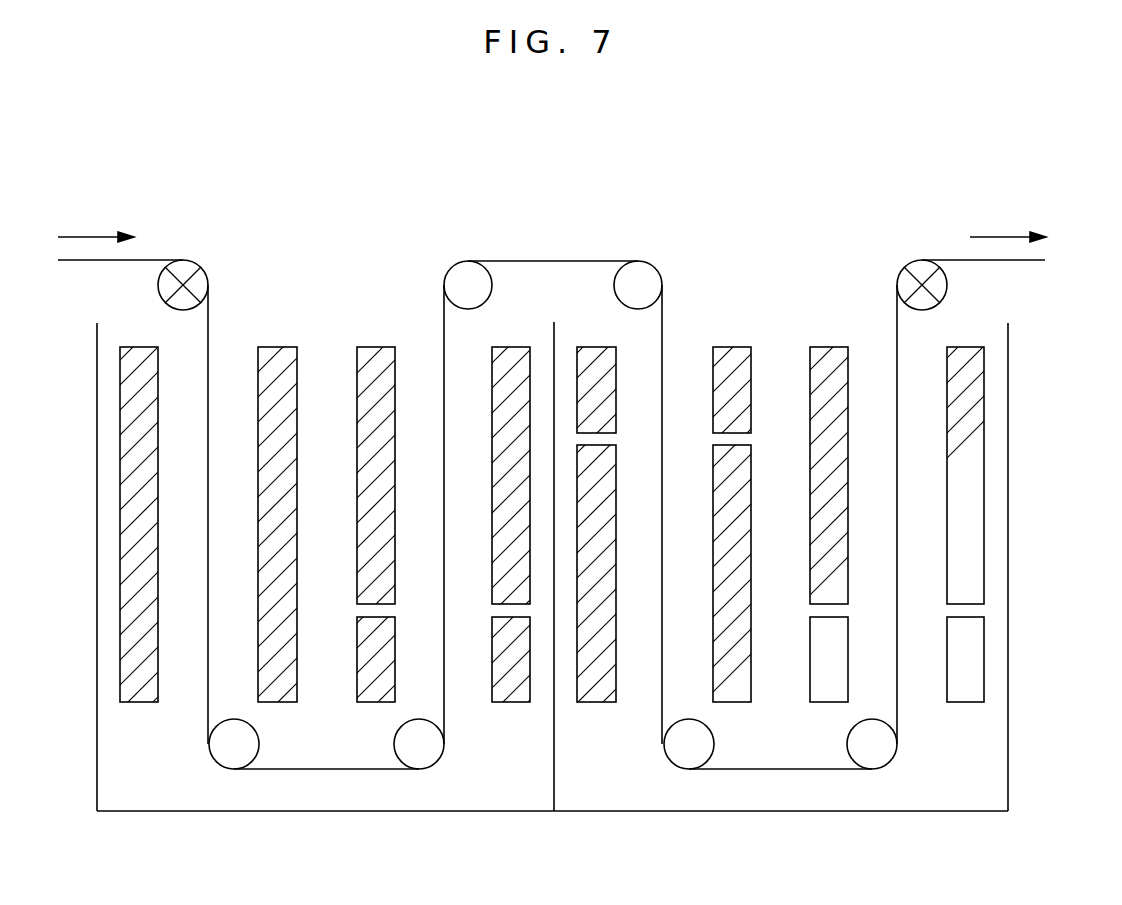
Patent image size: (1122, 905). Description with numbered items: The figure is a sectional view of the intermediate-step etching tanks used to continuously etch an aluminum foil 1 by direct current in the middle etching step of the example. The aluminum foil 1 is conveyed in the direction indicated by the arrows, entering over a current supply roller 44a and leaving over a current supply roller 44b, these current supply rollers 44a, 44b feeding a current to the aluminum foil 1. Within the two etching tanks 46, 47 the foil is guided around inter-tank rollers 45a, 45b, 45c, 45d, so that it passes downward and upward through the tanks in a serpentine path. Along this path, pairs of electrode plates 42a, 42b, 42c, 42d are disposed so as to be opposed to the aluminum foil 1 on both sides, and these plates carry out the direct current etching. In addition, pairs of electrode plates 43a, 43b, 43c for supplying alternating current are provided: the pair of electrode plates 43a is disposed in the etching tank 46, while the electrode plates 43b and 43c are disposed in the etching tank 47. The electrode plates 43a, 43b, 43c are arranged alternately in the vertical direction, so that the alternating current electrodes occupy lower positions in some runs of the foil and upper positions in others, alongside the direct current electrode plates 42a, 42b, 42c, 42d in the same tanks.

The aluminum foil 1 is at (68, 262).
The pair of electrode plates 42a is at (275, 540).
The pair of electrode plates 42b is at (520, 373).
The pair of electrode plates 42c is at (724, 658).
The pair of electrode plates 42d is at (960, 373).
The pair of electrode plates for supplying alternating current 43a is at (385, 660).
The pair of electrode plates for supplying alternating current 43b is at (596, 362).
The pair of electrode plates for supplying alternating current 43c is at (840, 678).
The current supply roller 44a is at (183, 272).
The current supply roller 44b is at (922, 272).
The inter-tank roller 45a is at (234, 752).
The inter-tank roller 45b is at (420, 752).
The inter-tank roller 45c is at (692, 752).
The inter-tank roller 45d is at (872, 752).
The etching tank 46 is at (97, 372).
The etching tank 47 is at (1008, 418).